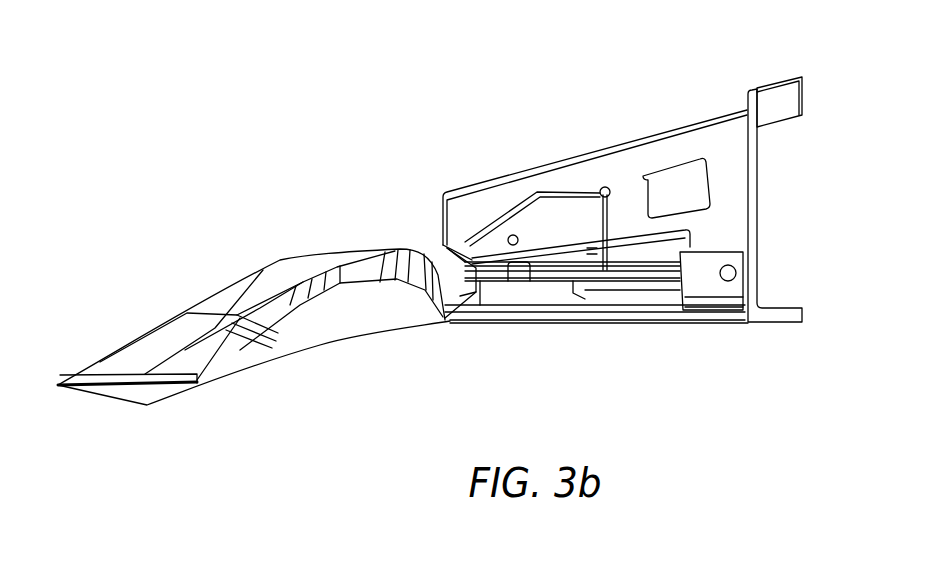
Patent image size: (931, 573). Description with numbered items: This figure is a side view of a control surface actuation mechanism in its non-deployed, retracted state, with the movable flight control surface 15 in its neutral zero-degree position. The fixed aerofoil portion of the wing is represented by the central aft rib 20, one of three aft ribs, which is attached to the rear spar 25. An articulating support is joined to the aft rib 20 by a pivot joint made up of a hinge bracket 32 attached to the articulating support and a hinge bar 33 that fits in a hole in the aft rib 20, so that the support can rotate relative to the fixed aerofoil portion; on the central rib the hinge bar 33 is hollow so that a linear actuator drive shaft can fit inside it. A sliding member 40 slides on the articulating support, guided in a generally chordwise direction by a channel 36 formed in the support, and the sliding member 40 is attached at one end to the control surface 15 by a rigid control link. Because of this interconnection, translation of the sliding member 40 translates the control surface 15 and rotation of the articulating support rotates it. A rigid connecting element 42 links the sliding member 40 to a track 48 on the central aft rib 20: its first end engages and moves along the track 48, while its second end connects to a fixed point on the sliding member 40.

The movable flight control surface 15 is at (337, 323).
The aft rib 20 is at (690, 138).
The rear spar 25 is at (780, 105).
The hinge bracket 32 is at (695, 283).
The hinge bar 33 is at (729, 281).
The channel 36 is at (525, 292).
The sliding member 40 is at (488, 280).
The rigid connecting element 42 is at (604, 222).
The track 48 is at (553, 192).